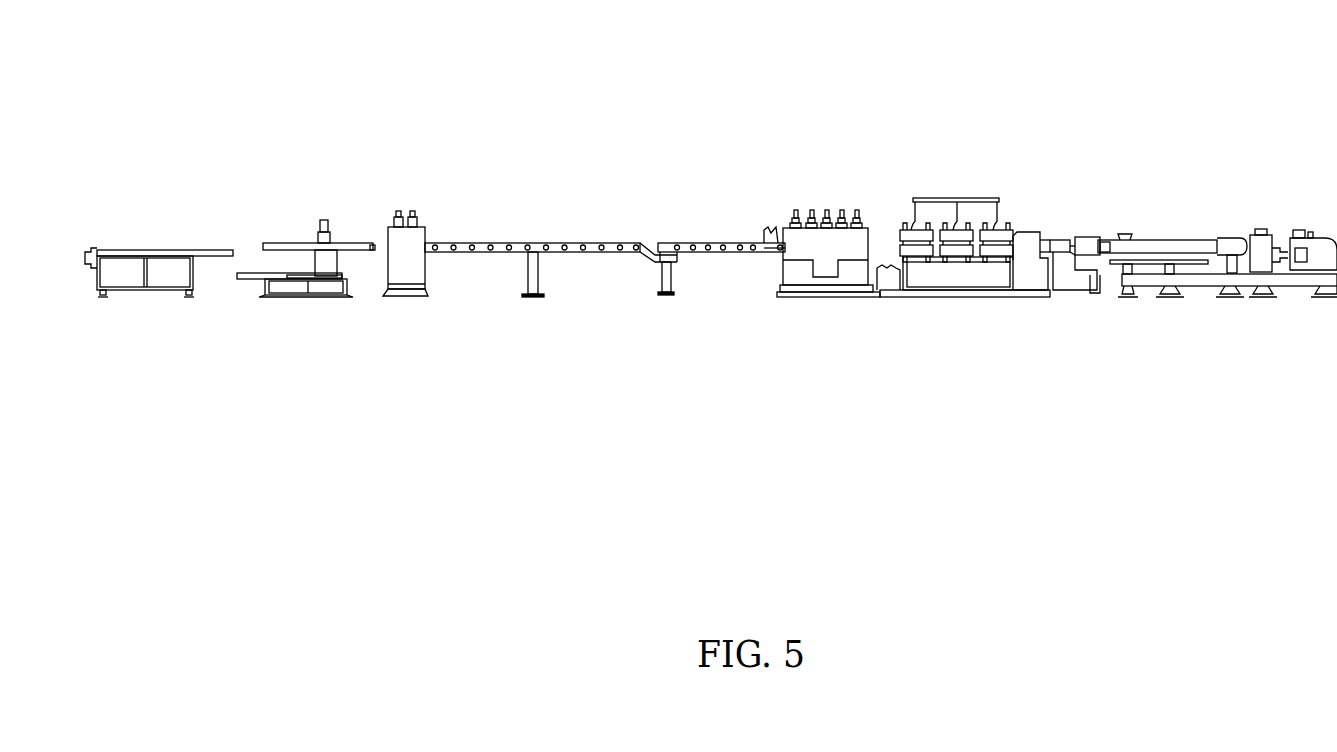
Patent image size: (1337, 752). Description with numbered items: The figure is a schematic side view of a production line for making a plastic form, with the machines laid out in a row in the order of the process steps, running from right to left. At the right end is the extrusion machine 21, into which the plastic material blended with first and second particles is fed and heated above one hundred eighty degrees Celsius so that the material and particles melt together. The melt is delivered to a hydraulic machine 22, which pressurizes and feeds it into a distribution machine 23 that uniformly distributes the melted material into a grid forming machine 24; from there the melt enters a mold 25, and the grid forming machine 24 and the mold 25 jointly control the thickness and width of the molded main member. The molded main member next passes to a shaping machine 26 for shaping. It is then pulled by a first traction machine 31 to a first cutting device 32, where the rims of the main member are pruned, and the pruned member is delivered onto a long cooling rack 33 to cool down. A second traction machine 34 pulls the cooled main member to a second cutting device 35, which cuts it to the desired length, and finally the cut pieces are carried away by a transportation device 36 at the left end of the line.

The extrusion machine 21 is at (1273, 225).
The hydraulic machine 22 is at (1045, 225).
The distribution machine 23 is at (1073, 265).
The grid forming machine 24 is at (1085, 246).
The mold 25 is at (1100, 267).
The shaping machine 26 is at (957, 190).
The first traction machine 31 is at (830, 205).
The first cutting device 32 is at (678, 238).
The cooling rack 33 is at (538, 238).
The second traction machine 34 is at (413, 203).
The second cutting device 35 is at (330, 210).
The transportation device 36 is at (155, 238).